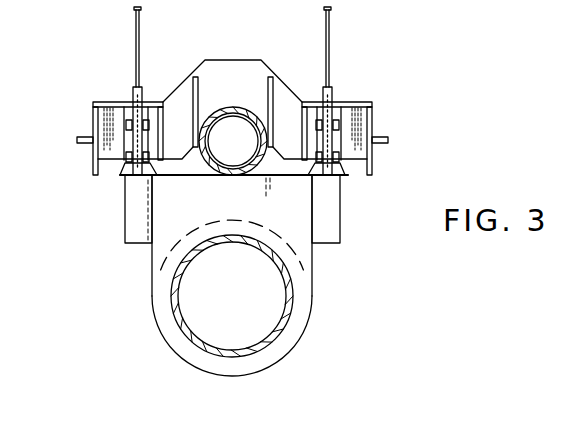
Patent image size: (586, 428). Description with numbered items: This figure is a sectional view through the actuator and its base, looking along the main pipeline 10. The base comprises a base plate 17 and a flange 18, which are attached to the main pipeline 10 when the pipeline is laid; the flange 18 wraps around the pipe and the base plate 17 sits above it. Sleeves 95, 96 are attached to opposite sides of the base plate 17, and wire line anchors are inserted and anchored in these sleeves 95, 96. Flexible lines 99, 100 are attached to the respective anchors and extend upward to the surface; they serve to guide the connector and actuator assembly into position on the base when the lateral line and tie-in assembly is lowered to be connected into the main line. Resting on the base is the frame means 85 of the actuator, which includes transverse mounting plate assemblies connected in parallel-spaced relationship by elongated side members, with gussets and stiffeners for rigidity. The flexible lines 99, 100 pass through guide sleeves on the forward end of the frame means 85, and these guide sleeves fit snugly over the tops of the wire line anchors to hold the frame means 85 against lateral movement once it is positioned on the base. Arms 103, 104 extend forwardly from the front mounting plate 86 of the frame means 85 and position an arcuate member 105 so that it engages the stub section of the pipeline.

The main pipeline 10 is at (264, 296).
The base plate 17 is at (196, 208).
The flange 18 is at (300, 341).
The frame means 85 is at (90, 99).
The front mounting plate 86 is at (254, 60).
The sleeve 95 is at (125, 213).
The sleeve 96 is at (340, 222).
The flexible line 99 is at (141, 26).
The flexible line 100 is at (332, 34).
The arm 103 is at (190, 82).
The arm 104 is at (276, 96).
The arcuate member 105 is at (219, 106).